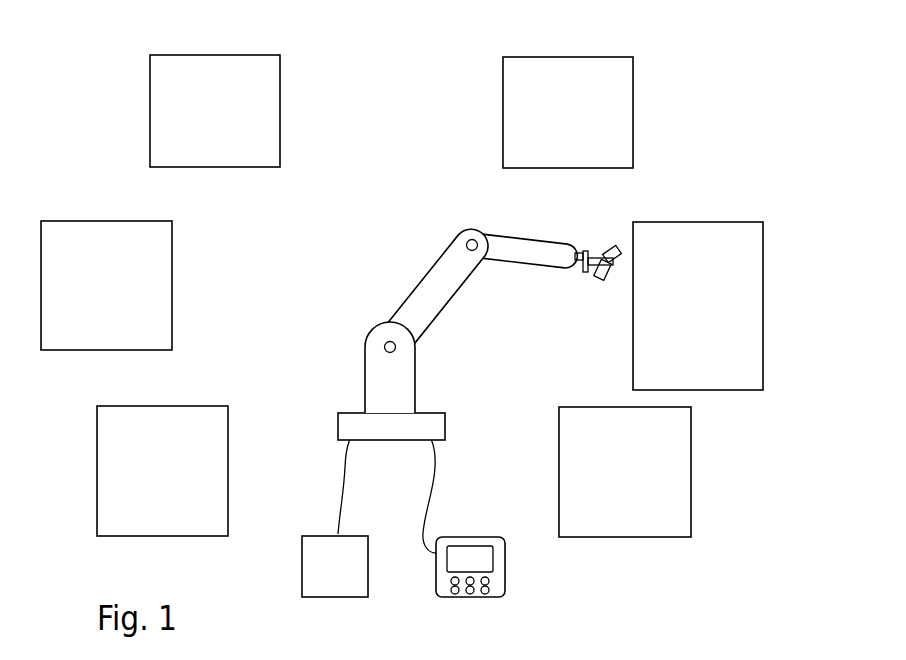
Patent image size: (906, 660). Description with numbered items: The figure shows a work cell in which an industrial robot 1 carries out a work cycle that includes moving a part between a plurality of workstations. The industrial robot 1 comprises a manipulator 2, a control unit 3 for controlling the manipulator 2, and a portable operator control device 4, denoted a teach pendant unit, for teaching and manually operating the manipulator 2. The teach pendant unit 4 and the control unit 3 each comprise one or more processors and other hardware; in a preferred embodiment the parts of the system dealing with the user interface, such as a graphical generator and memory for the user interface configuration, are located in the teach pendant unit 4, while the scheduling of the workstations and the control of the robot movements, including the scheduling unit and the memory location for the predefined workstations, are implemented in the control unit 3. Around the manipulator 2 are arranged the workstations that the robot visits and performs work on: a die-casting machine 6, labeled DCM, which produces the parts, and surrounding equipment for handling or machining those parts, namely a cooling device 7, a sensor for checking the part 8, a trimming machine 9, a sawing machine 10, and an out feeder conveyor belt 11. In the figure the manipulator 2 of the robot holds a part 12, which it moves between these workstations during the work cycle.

The industrial robot 1 is at (358, 302).
The manipulator 2 is at (397, 358).
The control unit 3 is at (315, 567).
The portable operator control device 4 is at (498, 567).
The die-casting machine 6 is at (698, 240).
The cooling device 7 is at (568, 75).
The sensor for checking the part 8 is at (215, 75).
The trimming machine 9 is at (98, 238).
The sawing machine 10 is at (113, 469).
The out feeder conveyor belt 11 is at (668, 471).
The part 12 is at (603, 281).